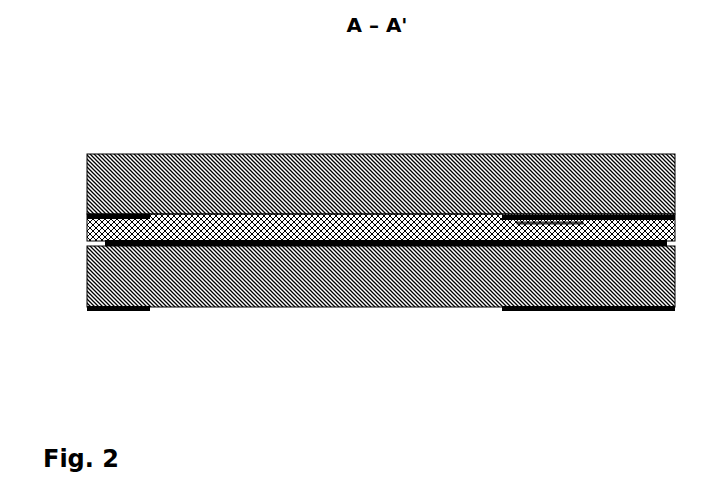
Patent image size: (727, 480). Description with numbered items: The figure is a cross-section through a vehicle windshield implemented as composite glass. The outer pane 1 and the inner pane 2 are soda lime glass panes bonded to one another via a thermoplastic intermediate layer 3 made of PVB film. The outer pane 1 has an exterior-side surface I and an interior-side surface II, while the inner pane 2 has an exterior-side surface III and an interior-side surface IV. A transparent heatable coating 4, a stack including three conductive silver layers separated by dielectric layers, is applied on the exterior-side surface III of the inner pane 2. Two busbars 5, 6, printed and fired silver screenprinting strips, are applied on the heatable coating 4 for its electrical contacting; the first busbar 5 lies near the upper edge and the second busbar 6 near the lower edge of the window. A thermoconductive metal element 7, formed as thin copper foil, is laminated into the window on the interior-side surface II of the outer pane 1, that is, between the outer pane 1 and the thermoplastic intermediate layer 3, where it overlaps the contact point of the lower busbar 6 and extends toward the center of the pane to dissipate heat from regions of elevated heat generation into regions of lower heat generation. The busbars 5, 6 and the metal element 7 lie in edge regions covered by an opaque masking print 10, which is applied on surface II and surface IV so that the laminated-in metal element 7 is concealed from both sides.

The outer pane 1 is at (291, 170).
The inner pane 2 is at (332, 292).
The thermoplastic intermediate layer 3 is at (464, 222).
The heatable coating 4 is at (432, 246).
The first busbar 5 is at (628, 241).
The second busbar 6 is at (112, 240).
The metal element 7 is at (515, 246).
The opaque masking print 10 is at (87, 168).
The exterior-side surface of the outer pane I is at (262, 153).
The interior-side surface of the outer pane II is at (215, 214).
The exterior-side surface of the inner pane III is at (243, 247).
The interior-side surface of the inner pane IV is at (277, 308).